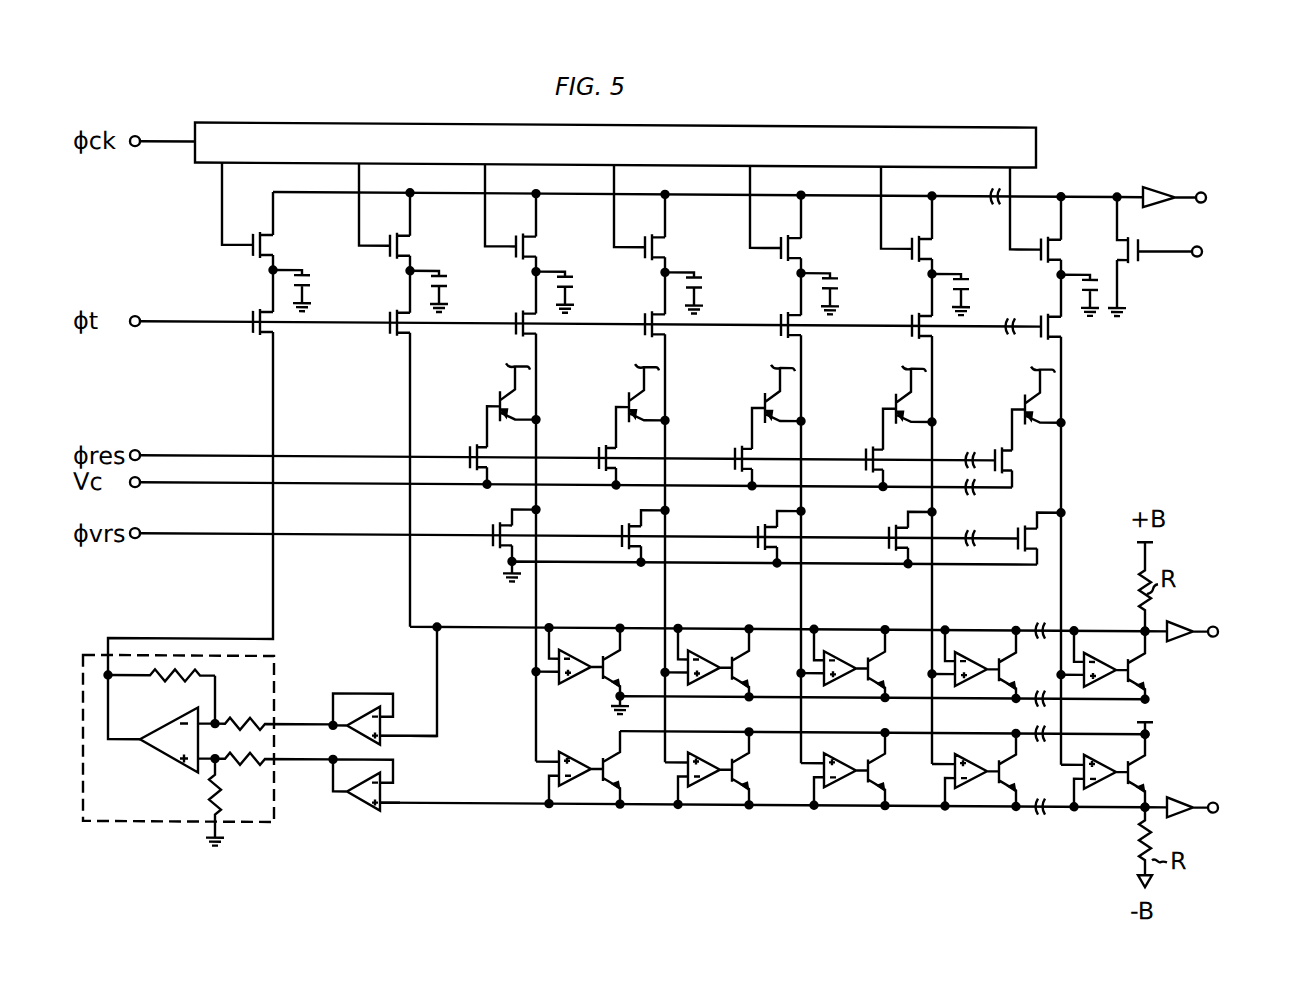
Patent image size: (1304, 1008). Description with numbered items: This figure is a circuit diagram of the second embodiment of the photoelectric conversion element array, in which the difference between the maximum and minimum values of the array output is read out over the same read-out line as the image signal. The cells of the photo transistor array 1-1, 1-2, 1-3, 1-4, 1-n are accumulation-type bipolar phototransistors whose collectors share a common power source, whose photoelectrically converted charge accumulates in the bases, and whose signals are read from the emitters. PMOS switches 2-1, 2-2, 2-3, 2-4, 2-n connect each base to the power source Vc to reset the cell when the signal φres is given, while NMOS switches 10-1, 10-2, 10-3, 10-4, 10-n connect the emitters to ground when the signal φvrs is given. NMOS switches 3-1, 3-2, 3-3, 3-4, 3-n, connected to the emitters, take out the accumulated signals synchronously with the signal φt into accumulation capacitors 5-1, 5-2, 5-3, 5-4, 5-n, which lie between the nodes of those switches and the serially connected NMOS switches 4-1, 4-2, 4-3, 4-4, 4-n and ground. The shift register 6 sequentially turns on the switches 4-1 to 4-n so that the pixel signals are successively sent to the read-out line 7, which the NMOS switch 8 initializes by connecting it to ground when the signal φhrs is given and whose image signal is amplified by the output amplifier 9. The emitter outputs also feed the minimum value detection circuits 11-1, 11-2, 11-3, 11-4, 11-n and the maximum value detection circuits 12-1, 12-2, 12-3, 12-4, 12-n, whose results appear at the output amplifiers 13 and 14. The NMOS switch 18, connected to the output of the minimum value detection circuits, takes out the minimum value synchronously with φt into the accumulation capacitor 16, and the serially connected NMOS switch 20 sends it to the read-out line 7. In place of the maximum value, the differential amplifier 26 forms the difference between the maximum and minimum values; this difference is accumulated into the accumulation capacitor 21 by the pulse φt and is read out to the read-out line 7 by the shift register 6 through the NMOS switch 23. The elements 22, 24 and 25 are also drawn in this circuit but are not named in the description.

The shift register 6 is at (1038, 134).
The read-out line 7 is at (1084, 192).
The NMOS switch 8 is at (1143, 238).
The output amplifier 9 is at (1159, 179).
The output amplifier 13 is at (1177, 613).
The output amplifier 14 is at (1176, 789).
The accumulation capacitor 16 is at (452, 286).
The NMOS switch 18 is at (429, 333).
The NMOS switch 20 is at (411, 212).
The accumulation capacitor 21 is at (315, 285).
The transfer transistor 22 is at (292, 332).
The NMOS switch 23 is at (274, 211).
The buffer amplifier 24 is at (356, 805).
The buffer amplifier 25 is at (367, 704).
The differential amplifier 26 is at (278, 665).
The photo transistor array cell 1-1 is at (546, 393).
The photo transistor array cell 1-2 is at (675, 394).
The photo transistor array cell 1-3 is at (811, 395).
The photo transistor array cell 1-4 is at (942, 396).
The photo transistor array cell 1-n is at (1071, 397).
The PMOS switch 2-1 is at (466, 441).
The PMOS switch 2-2 is at (595, 442).
The PMOS switch 2-3 is at (731, 443).
The PMOS switch 2-4 is at (862, 443).
The PMOS switch 2-n is at (991, 442).
The NMOS switch 3-1 is at (557, 333).
The NMOS switch 3-2 is at (686, 334).
The NMOS switch 3-3 is at (822, 335).
The NMOS switch 3-4 is at (953, 336).
The NMOS switch 3-n is at (1082, 337).
The NMOS switch 4-1 is at (540, 212).
The NMOS switch 4-2 is at (669, 213).
The NMOS switch 4-3 is at (805, 214).
The NMOS switch 4-4 is at (936, 215).
The NMOS switch 4-n is at (1065, 215).
The accumulation capacitor 5-1 is at (583, 287).
The accumulation capacitor 5-2 is at (712, 287).
The accumulation capacitor 5-3 is at (848, 288).
The accumulation capacitor 5-4 is at (979, 289).
The accumulation capacitor 5-n is at (1120, 293).
The NMOS switch 10-1 is at (484, 529).
The NMOS switch 10-2 is at (613, 530).
The NMOS switch 10-3 is at (749, 531).
The NMOS switch 10-4 is at (880, 531).
The NMOS switch 10-n is at (1009, 531).
The minimum value detection circuit 11-1 is at (578, 637).
The minimum value detection circuit 11-2 is at (707, 637).
The minimum value detection circuit 11-3 is at (843, 638).
The minimum value detection circuit 11-4 is at (974, 639).
The minimum value detection circuit 11-n is at (1103, 640).
The maximum value detection circuit 12-1 is at (580, 797).
The maximum value detection circuit 12-2 is at (709, 795).
The maximum value detection circuit 12-3 is at (845, 796).
The maximum value detection circuit 12-4 is at (976, 796).
The maximum value detection circuit 12-n is at (1105, 799).